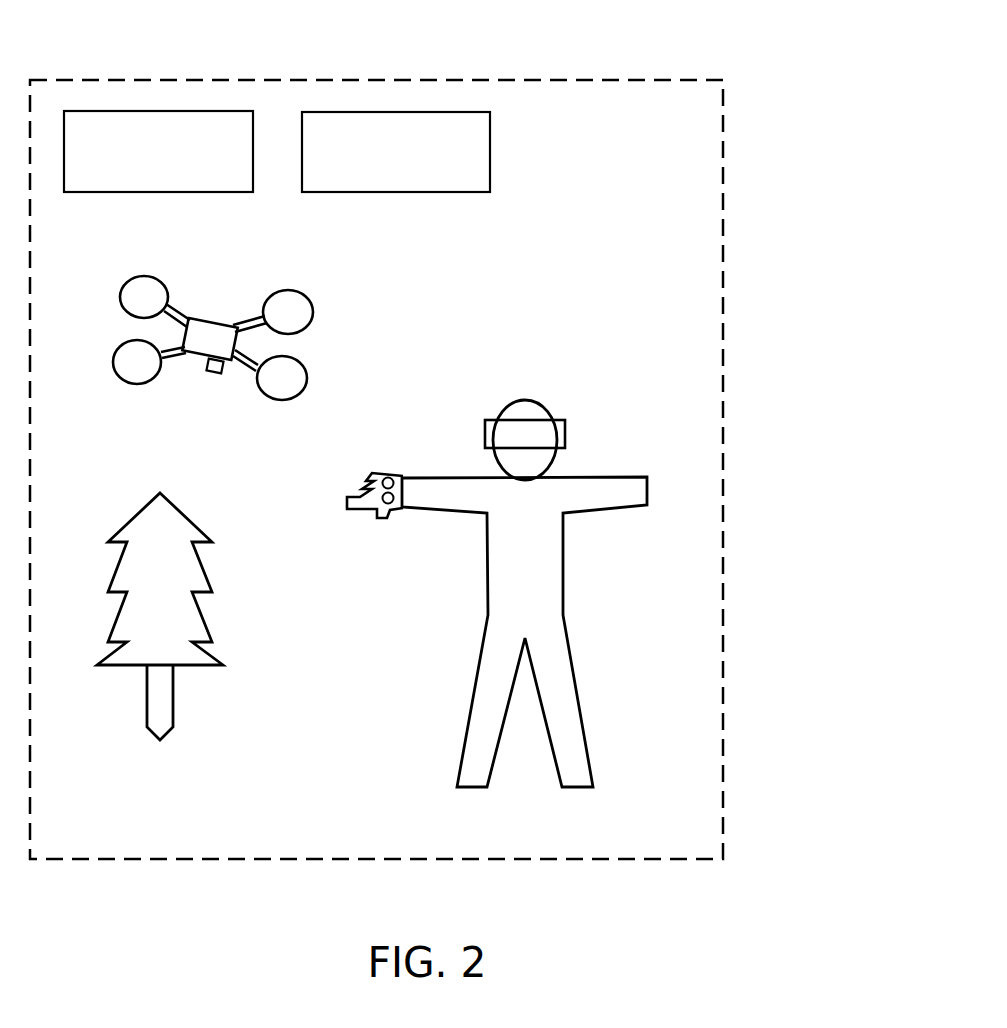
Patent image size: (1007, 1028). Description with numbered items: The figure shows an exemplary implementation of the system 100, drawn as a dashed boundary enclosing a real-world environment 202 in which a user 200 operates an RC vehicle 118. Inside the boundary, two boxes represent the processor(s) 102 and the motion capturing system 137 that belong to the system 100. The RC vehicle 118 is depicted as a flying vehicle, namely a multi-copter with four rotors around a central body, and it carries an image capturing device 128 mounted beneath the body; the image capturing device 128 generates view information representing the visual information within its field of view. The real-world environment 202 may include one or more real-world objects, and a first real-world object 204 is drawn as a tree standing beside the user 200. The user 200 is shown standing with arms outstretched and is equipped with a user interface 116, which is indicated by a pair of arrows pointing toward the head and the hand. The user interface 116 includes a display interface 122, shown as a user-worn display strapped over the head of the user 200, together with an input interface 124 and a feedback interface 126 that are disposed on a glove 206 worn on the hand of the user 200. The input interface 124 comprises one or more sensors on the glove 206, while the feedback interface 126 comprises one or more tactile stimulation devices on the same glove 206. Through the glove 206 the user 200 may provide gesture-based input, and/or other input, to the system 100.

The system 100 is at (614, 47).
The processor(s) 102 is at (396, 152).
The motion capturing system 137 is at (158, 151).
The real-world environment 202 is at (623, 213).
The RC vehicle 118 is at (213, 345).
The image capturing device 128 is at (218, 373).
The user interface 116 is at (454, 456).
The display interface 122 is at (563, 418).
The input interface 124 is at (391, 476).
The feedback interface 126 is at (398, 509).
The glove 206 is at (367, 478).
The user 200 is at (465, 570).
The first real-world object 204 is at (175, 721).